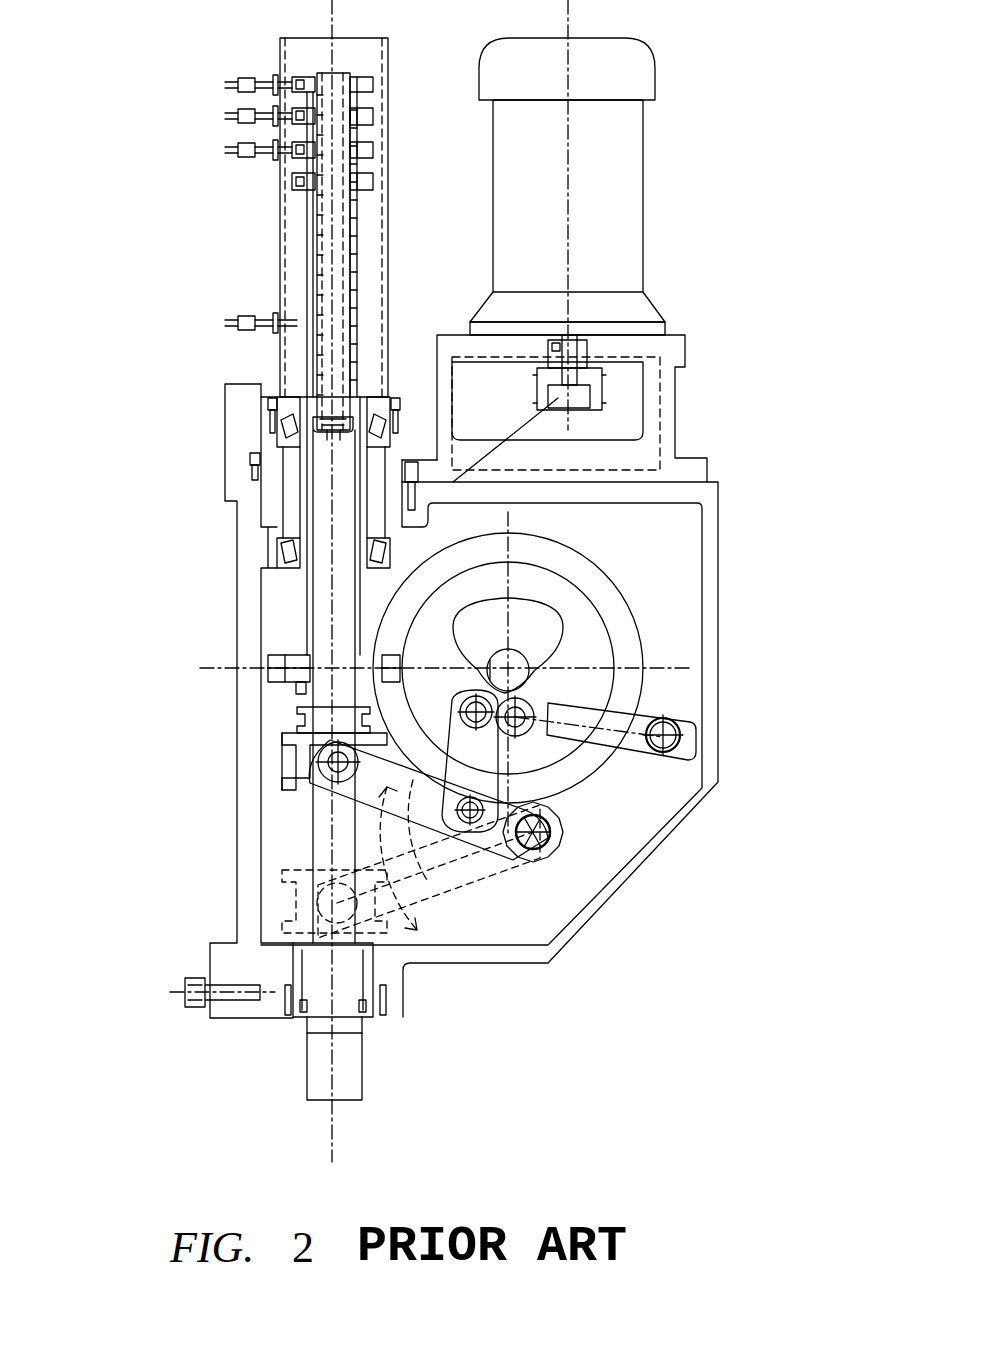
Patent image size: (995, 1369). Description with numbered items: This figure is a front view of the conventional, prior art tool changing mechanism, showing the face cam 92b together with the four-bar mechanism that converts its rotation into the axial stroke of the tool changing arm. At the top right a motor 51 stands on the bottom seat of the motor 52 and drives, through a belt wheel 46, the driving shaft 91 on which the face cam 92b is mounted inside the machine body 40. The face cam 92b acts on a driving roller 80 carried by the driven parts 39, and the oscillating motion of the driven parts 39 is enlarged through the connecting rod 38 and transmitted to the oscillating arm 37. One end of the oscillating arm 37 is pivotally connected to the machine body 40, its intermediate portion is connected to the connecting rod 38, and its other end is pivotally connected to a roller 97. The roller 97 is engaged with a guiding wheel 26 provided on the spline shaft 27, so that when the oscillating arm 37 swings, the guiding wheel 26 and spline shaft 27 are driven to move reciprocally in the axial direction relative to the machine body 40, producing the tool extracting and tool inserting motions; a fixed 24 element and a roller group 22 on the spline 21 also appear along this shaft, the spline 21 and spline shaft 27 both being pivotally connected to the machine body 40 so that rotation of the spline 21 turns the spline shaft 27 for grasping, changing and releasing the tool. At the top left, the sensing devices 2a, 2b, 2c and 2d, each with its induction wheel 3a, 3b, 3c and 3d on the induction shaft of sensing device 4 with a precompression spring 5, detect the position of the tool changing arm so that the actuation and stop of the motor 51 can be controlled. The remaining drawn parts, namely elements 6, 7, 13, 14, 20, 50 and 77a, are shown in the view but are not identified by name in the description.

The sensing device 2a is at (233, 85).
The sensing device 2b is at (238, 117).
The sensing device 2c is at (238, 150).
The sensing device 2d is at (237, 322).
The induction wheel 3a is at (372, 84).
The induction wheel 3b is at (372, 120).
The induction wheel 3c is at (372, 155).
The induction wheel 3d is at (370, 187).
The induction shaft of sensing device 4 is at (327, 212).
The precompression spring 5 is at (317, 252).
The coupling cup 6 is at (340, 333).
The rotary joint housing tube 7 is at (388, 277).
The bearing 13 is at (280, 410).
The bolt 14 is at (283, 435).
The frame 20 is at (276, 499).
The spline 21 is at (307, 611).
The roller group 22 is at (272, 670).
The fixed 24 is at (303, 723).
The guiding wheel 26 is at (305, 787).
The spline shaft 27 is at (327, 1057).
The oscillating arm 37 is at (500, 855).
The connecting rod 38 is at (530, 732).
The driven parts 39 is at (637, 718).
The machine body 40 is at (697, 803).
The belt wheel 46 is at (598, 385).
The gear 50 is at (617, 605).
The motor 51 is at (618, 187).
The bottom seat of the motor 52 is at (665, 443).
The lower bearing housing 77a is at (367, 1033).
The driving roller 80 is at (483, 768).
The driving shaft 91 is at (517, 663).
The face cam 92b is at (535, 578).
The roller 97 is at (320, 765).